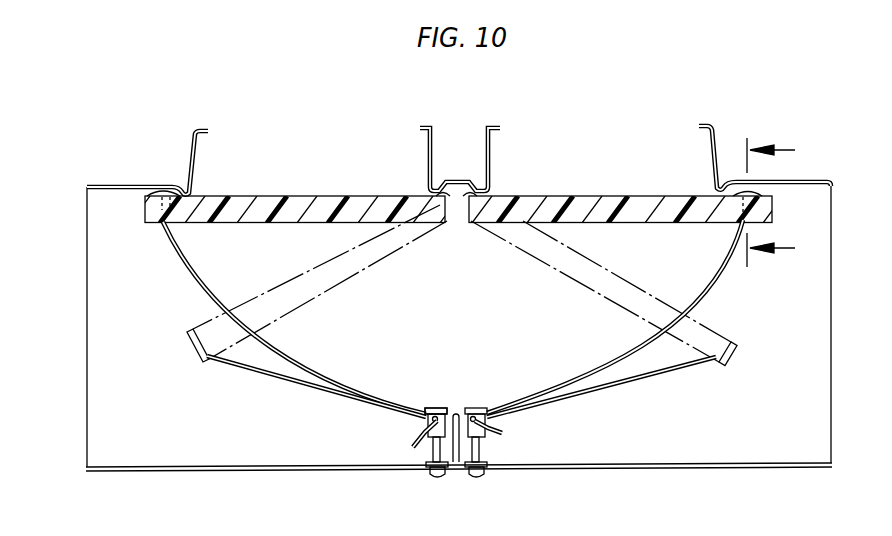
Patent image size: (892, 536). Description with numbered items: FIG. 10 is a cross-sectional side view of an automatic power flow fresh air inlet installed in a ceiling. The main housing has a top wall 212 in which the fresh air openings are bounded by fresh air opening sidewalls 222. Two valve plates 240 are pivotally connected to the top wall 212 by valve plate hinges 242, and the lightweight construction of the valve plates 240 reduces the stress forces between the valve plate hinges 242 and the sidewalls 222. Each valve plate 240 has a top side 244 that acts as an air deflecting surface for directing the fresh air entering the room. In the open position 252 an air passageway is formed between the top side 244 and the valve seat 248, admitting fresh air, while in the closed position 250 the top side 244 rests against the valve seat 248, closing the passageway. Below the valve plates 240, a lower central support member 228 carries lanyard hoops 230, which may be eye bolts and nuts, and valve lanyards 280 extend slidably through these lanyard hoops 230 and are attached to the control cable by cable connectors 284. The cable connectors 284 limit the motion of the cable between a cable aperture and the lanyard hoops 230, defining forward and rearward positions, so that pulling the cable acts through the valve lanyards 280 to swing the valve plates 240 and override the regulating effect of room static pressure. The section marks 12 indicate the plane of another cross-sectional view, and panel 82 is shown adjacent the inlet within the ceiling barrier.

The section line 12- 12 is at (785, 202).
The panel 82 is at (157, 195).
The top wall 212 is at (113, 186).
The fresh air opening sidewalls 222 is at (192, 150).
The lower central support member 228 is at (456, 465).
The lanyard hoops 230 is at (433, 451).
The valve plate 240 is at (456, 157).
The valve plate hinges 242 is at (418, 196).
The top side 244 is at (617, 196).
The valve seats 248 is at (203, 192).
The closed position 250 is at (150, 213).
The open position 252 is at (190, 347).
The valve lanyards 280 is at (568, 383).
The cable connectors 284 is at (437, 406).